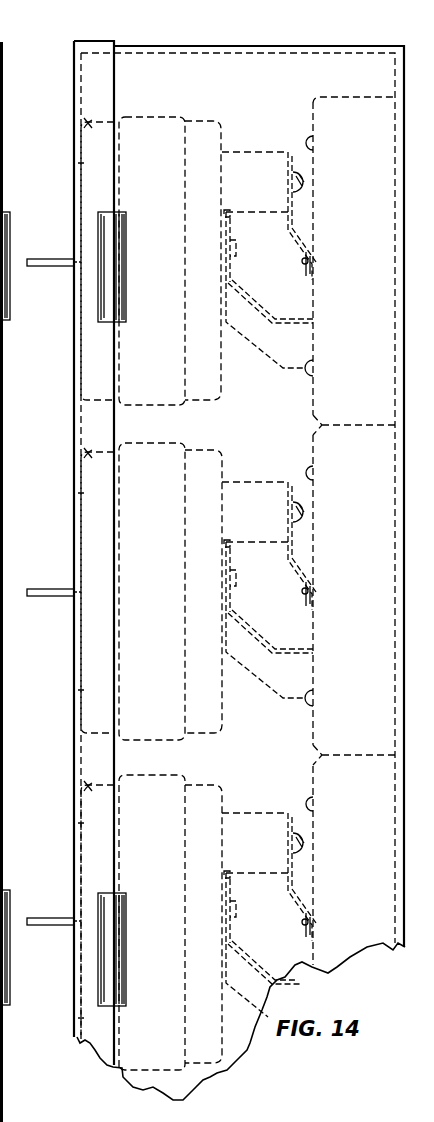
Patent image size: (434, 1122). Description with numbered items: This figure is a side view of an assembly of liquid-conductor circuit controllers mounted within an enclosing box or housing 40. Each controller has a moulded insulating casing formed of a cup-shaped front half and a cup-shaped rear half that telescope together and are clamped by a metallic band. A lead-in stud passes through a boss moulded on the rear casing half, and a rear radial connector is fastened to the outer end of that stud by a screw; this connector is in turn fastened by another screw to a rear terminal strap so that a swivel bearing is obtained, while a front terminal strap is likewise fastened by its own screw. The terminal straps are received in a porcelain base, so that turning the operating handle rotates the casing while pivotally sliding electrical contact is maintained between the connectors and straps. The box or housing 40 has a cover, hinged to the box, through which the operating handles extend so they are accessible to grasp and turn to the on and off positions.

The enclosing box or housing 40 is at (214, 55).